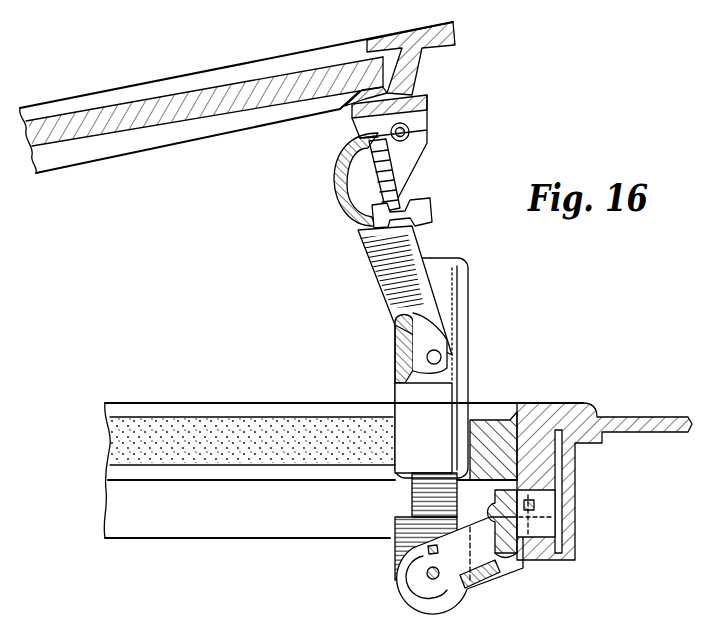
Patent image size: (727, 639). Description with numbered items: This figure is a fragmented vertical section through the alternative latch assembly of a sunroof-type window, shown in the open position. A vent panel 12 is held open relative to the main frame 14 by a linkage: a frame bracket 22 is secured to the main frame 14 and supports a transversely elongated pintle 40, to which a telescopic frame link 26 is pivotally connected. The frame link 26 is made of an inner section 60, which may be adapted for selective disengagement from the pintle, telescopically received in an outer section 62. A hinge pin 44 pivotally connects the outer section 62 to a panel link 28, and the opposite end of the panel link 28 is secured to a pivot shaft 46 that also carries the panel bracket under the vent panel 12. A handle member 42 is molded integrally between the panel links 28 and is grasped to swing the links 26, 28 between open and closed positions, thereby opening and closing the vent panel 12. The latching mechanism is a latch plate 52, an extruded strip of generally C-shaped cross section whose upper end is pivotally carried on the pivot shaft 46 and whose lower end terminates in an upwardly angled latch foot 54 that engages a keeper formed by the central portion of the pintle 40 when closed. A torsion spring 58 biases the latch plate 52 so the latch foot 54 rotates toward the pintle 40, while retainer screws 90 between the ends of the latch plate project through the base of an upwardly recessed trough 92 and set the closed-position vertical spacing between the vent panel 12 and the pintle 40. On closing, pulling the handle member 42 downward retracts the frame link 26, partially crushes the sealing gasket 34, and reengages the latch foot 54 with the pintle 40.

The vent panel 12 is at (162, 103).
The main frame 14 is at (540, 462).
The frame bracket 22 is at (505, 573).
The telescopic frame link 26 is at (475, 289).
The panel link 28 is at (423, 282).
The sealing gasket 34 is at (517, 405).
The pintle 40 is at (457, 596).
The handle member 42 is at (397, 368).
The hinge pin 44 is at (440, 354).
The pivot shaft 46 is at (422, 138).
The latch plate 52 is at (330, 184).
The latch foot 54 is at (430, 218).
The torsion spring 58 is at (403, 68).
The inner section 60 is at (393, 515).
The outer section 62 is at (452, 390).
The retainer screw 90 is at (403, 182).
The trough 92 is at (380, 240).